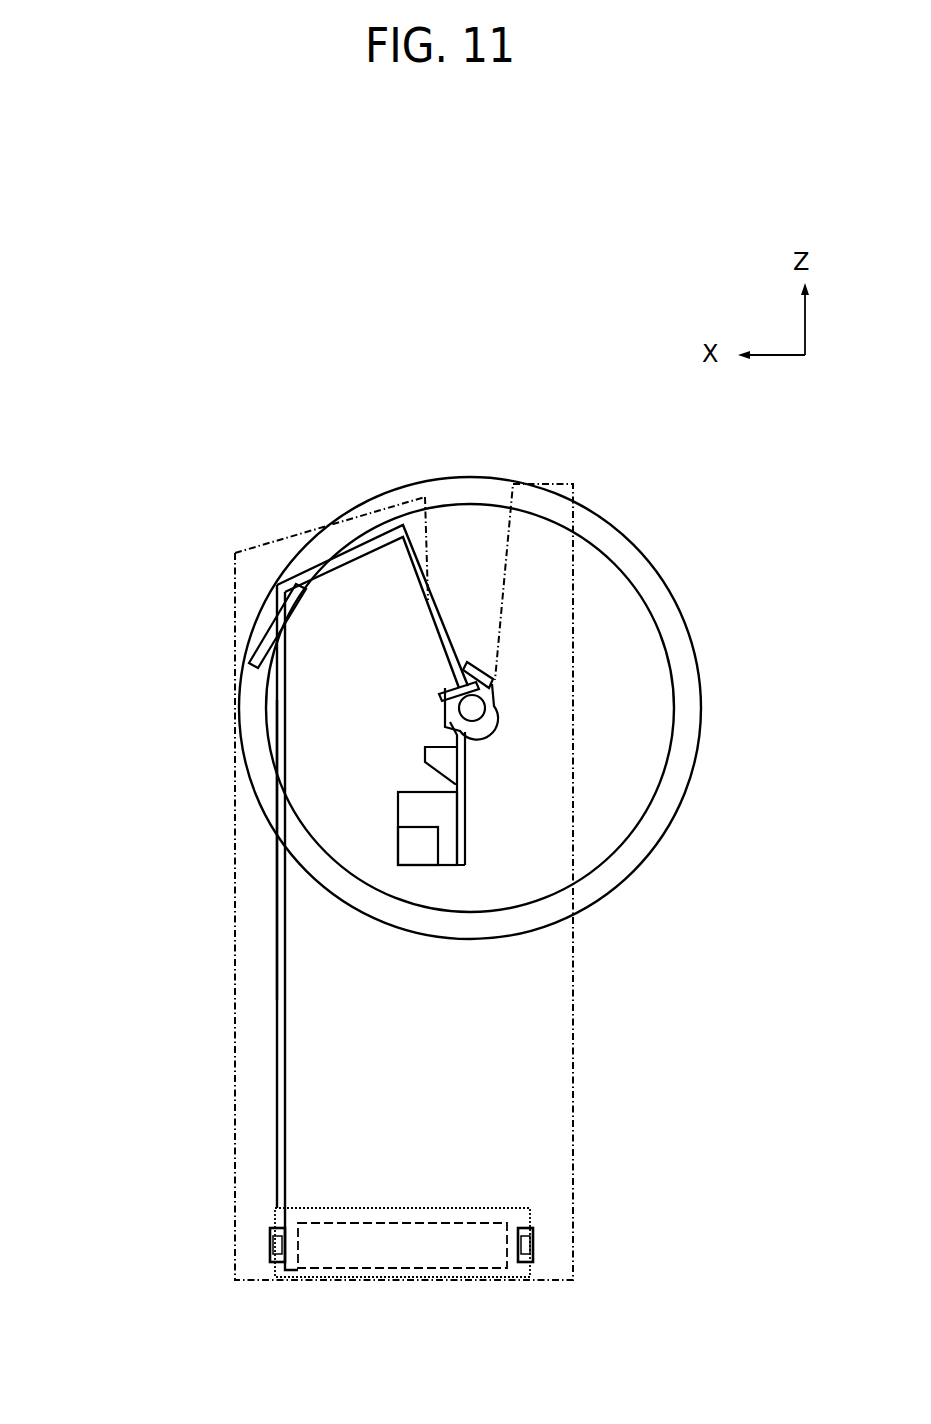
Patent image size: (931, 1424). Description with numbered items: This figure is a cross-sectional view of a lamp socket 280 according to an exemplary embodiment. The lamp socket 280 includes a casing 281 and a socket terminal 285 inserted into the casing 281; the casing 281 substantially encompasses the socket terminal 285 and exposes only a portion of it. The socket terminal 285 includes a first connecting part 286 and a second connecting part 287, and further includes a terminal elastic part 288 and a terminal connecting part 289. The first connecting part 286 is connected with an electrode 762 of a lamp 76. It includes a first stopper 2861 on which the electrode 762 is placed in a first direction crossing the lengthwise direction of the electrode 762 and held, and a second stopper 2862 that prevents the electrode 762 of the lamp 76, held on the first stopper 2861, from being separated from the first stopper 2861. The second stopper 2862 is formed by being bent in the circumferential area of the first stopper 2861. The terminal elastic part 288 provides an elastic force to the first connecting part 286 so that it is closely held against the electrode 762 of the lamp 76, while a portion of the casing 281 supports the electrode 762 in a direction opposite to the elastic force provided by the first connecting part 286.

The lamp socket 280 is at (562, 299).
The casing 281 is at (230, 1031).
The socket terminal 285 is at (271, 952).
The first connecting part 286 is at (504, 395).
The first stopper 2861 is at (447, 672).
The second stopper 2862 is at (492, 680).
The second connecting part 287 is at (287, 1282).
The terminal elastic part 288 is at (346, 552).
The terminal connecting part 289 is at (278, 853).
The lamp 76 is at (662, 566).
The electrode 762 is at (452, 716).